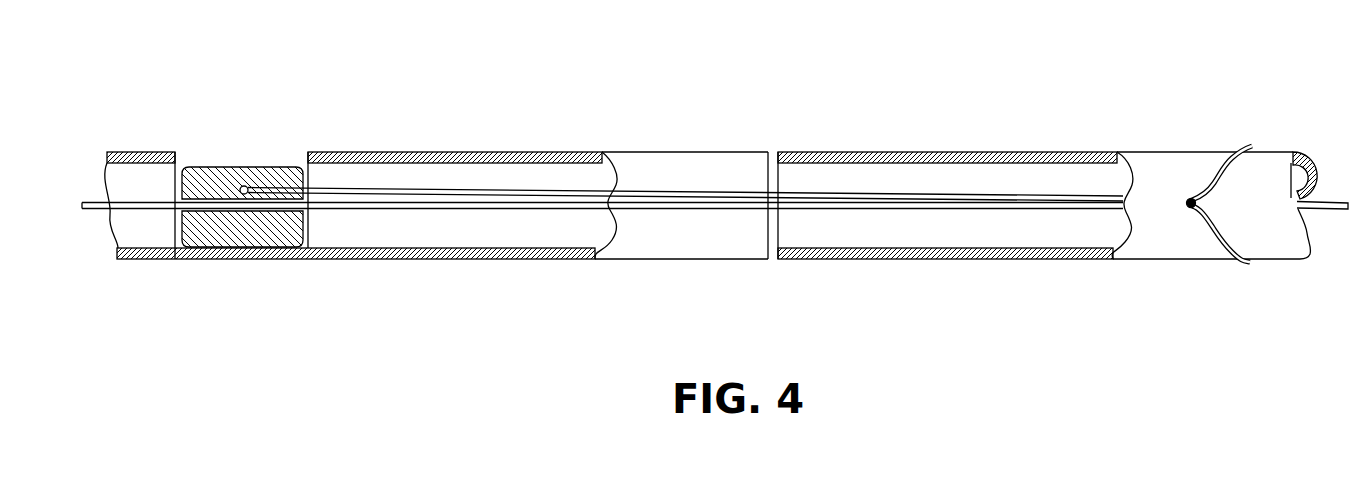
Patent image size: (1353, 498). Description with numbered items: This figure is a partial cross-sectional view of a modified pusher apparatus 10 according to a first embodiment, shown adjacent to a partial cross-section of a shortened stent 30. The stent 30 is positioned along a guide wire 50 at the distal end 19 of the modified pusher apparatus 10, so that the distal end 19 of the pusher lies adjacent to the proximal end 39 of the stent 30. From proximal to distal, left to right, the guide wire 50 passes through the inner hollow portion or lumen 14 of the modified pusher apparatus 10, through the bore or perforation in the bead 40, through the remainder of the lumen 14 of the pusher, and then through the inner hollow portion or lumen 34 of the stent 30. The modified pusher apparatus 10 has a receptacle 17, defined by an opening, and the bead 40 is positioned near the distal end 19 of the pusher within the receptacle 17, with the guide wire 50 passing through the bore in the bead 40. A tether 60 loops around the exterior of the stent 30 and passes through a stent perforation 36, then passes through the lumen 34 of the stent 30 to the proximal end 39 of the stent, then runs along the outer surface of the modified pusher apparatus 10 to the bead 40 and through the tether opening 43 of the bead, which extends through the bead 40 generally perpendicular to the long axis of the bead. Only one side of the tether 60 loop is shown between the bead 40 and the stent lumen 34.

The modified pusher apparatus 10 is at (537, 133).
The lumen 14 is at (116, 187).
The receptacle 17 is at (292, 133).
The distal end 19 is at (772, 152).
The stent 30 is at (1162, 134).
The lumen 34 is at (1303, 177).
The stent perforation 36 is at (1188, 209).
The proximal end 39 is at (774, 246).
The bead 40 is at (220, 161).
The tether opening 43 is at (244, 186).
The guide wire 50 is at (93, 222).
The tether 60 is at (1252, 135).